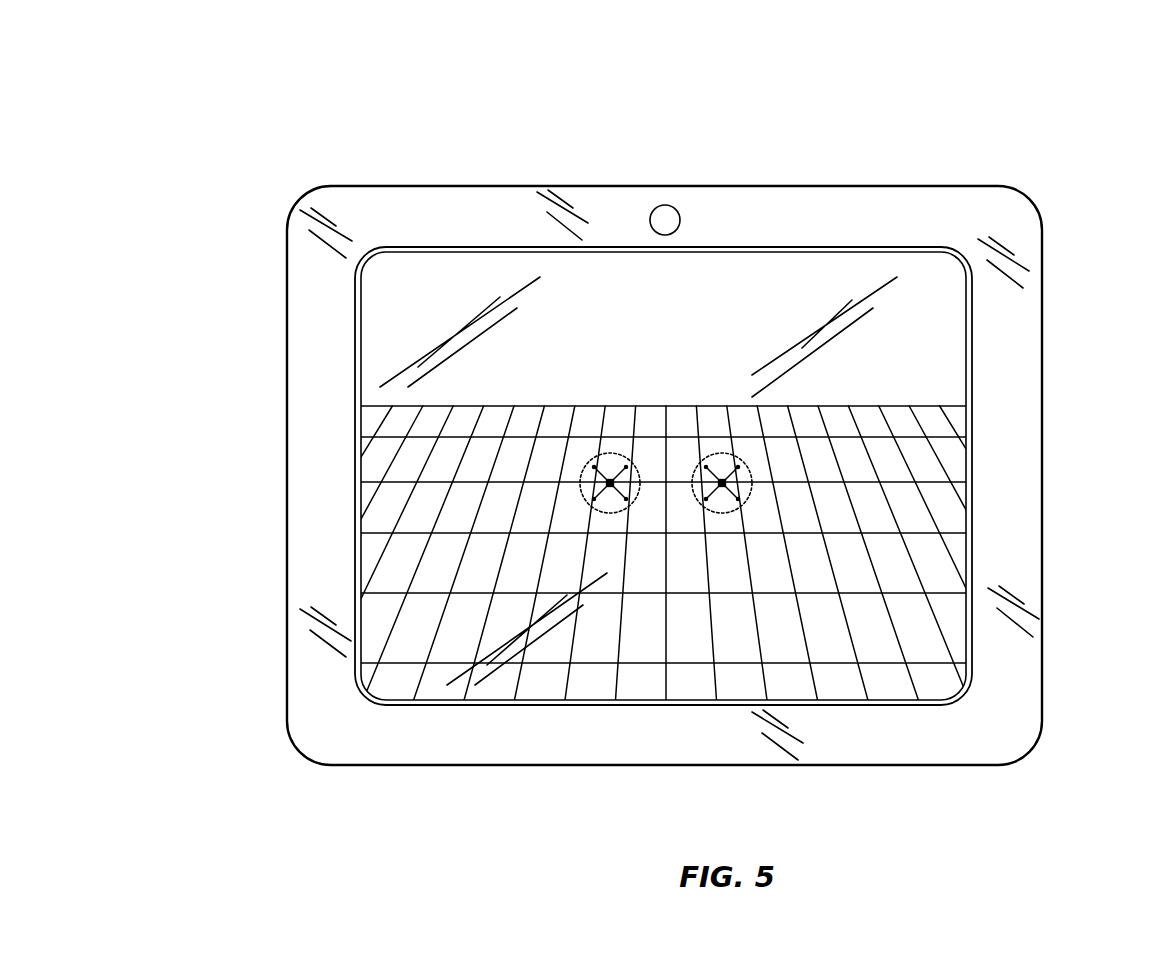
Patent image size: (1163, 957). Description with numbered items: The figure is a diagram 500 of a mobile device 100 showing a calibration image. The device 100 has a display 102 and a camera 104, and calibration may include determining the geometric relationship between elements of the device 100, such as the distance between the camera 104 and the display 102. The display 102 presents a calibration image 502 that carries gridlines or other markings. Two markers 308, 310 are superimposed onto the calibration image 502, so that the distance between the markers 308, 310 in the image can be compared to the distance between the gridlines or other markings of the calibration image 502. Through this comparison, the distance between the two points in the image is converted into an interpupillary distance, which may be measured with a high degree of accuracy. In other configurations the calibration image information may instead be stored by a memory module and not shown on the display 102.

The diagram 500 is at (244, 113).
The device 100 is at (1060, 197).
The display 102 is at (929, 270).
The camera 104 is at (667, 208).
The marker 308 is at (604, 454).
The marker 310 is at (722, 454).
The calibration image 502 is at (923, 428).